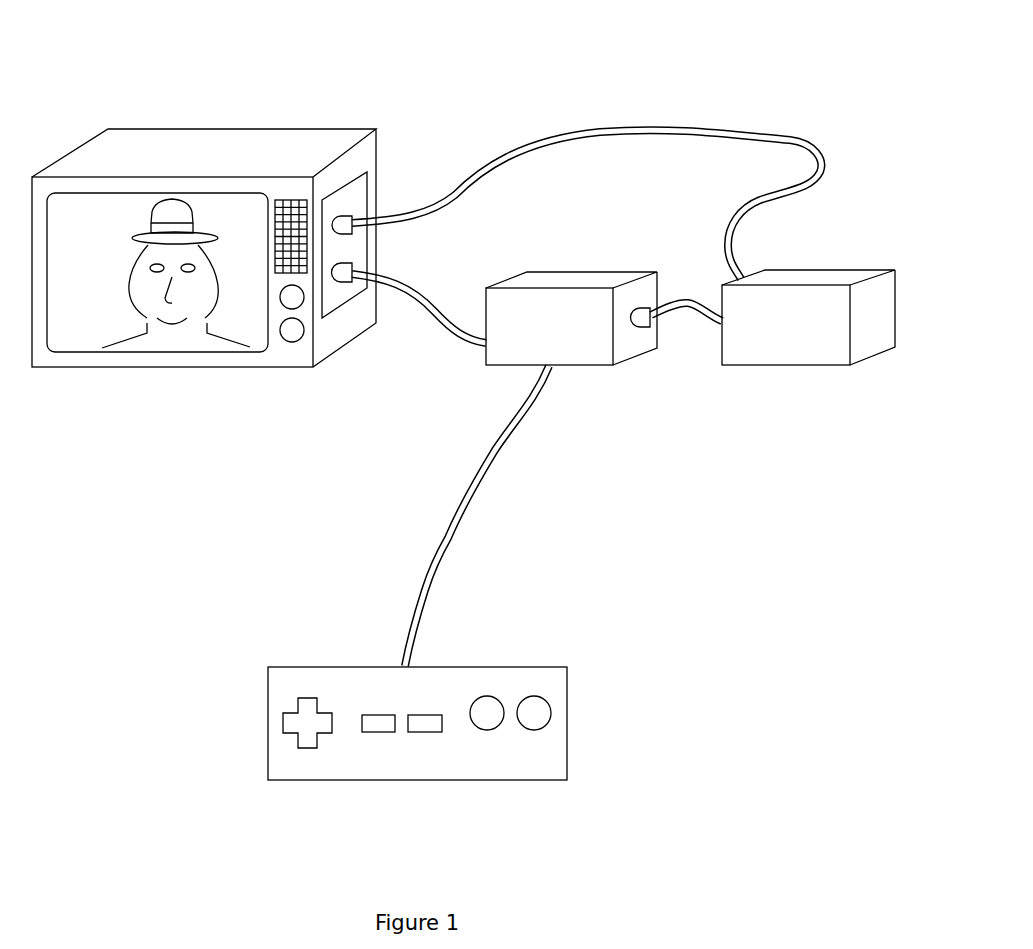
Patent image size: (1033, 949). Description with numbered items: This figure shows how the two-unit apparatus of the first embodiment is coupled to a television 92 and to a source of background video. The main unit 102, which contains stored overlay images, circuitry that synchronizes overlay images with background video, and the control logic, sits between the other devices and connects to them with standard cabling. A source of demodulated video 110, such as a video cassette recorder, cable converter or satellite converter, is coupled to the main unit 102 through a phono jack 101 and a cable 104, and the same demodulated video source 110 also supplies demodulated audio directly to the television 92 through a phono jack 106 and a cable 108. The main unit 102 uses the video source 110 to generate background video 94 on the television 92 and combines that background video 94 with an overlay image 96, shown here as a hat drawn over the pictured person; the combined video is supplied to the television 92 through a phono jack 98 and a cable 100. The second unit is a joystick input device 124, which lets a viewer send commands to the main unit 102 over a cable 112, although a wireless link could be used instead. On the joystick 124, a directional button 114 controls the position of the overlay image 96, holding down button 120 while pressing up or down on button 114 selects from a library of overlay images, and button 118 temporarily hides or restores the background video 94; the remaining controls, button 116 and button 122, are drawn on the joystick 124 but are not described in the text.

The television 92 is at (163, 122).
The background video 94 is at (125, 308).
The overlay image 96 is at (193, 207).
The phono jack 98 is at (340, 288).
The cable 100 is at (420, 290).
The phono jack 101 is at (643, 330).
The main unit 102 is at (587, 373).
The cable 104 is at (695, 295).
The phono jack 106 is at (343, 213).
The cable 108 is at (678, 118).
The demodulated video source 110 is at (783, 372).
The cable 112 is at (438, 540).
The button 114 is at (292, 735).
The select button 116 is at (375, 733).
The button 118 is at (422, 737).
The button 120 is at (488, 735).
The action button 122 is at (543, 735).
The joystick input device 124 is at (545, 655).